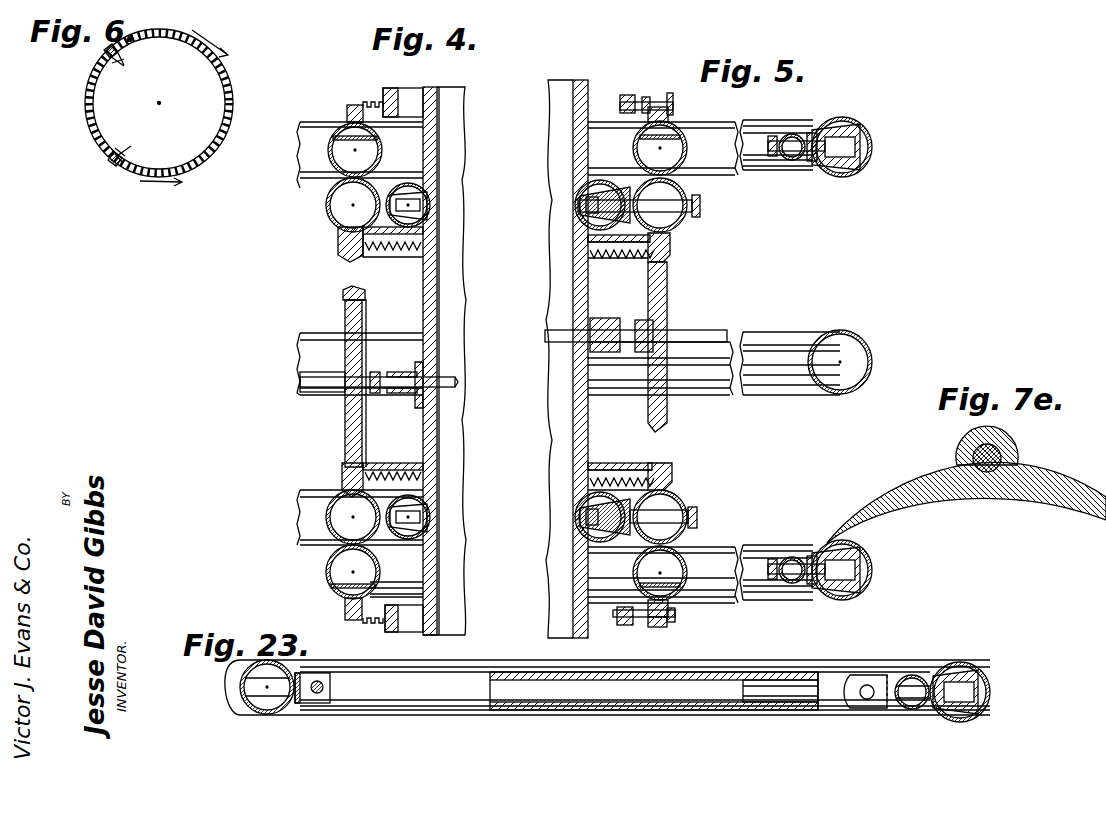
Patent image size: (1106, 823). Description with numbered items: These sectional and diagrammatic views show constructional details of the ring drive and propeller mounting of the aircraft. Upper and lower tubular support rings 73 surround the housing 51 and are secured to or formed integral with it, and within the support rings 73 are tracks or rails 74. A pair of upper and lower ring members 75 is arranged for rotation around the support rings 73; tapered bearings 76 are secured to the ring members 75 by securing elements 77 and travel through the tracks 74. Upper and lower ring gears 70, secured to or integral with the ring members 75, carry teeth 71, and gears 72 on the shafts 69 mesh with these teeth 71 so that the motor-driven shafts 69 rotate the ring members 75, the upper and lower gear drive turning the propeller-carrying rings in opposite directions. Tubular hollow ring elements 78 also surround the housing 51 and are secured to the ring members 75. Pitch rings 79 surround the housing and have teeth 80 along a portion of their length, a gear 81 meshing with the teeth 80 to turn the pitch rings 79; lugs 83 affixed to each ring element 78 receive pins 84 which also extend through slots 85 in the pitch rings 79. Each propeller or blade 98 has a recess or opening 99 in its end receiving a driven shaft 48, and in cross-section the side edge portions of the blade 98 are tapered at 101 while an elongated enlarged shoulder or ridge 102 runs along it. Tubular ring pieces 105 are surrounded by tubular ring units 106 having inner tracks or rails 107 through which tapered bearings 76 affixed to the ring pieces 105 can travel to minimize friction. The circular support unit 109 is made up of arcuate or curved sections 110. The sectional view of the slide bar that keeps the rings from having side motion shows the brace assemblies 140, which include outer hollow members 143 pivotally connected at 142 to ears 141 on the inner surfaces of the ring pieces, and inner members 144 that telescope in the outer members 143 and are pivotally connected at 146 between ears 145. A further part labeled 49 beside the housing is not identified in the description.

In FIG. 7E, the driven shaft 48 is at (974, 456).
In FIG. 4, the side plate 49 is at (455, 598).
In FIG. 5, the side plate 49 is at (572, 278).
In FIG. 4, the housing 51 is at (447, 458).
In FIG. 5, the housing 51 is at (563, 448).
In FIG. 4, the shafts 69 is at (456, 382).
In FIG. 5, the shafts 69 is at (560, 342).
In FIG. 4, the ring gears 70 is at (408, 250).
In FIG. 5, the ring gears 70 is at (672, 240).
In FIG. 4, the teeth 71 is at (372, 250).
In FIG. 5, the teeth 71 is at (622, 258).
In FIG. 4, the gears 72 is at (366, 330).
In FIG. 5, the gears 72 is at (670, 312).
In FIG. 4, the tubular support rings 73 is at (400, 172).
In FIG. 5, the tubular support rings 73 is at (592, 230).
In FIG. 4, the tracks or rails 74 is at (432, 220).
In FIG. 5, the tracks or rails 74 is at (602, 540).
In FIG. 4, the ring members 75 is at (326, 210).
In FIG. 5, the ring members 75 is at (688, 212).
In FIG. 5, the tapered bearings 76 is at (584, 210).
In FIG. 5, the securing elements 77 is at (701, 204).
In FIG. 4, the tubular hollow ring elements 78 is at (344, 130).
In FIG. 5, the tubular hollow ring elements 78 is at (682, 128).
In FIG. 23, the tubular hollow ring elements 78 is at (274, 716).
In FIG. 6, the pitch rings 79 is at (225, 84).
In FIG. 4, the pitch rings 79 is at (390, 96).
In FIG. 5, the pitch rings 79 is at (645, 96).
In FIG. 6, the teeth 80 is at (94, 135).
In FIG. 6, the gear 81 is at (102, 50).
In FIG. 5, the lugs 83 is at (669, 92).
In FIG. 5, the pins 84 is at (670, 110).
In FIG. 5, the slots 85 is at (624, 100).
In FIG. 7E, the propellers or blades 98 is at (1073, 519).
In FIG. 7E, the recess or opening 99 is at (990, 484).
In FIG. 5, the tapered side edge portions 101 is at (838, 542).
In FIG. 7E, the shoulder or ridge 102 is at (1010, 456).
In FIG. 5, the tubular ring pieces 105 is at (792, 160).
In FIG. 23, the tubular ring pieces 105 is at (952, 656).
In FIG. 5, the tubular ring units 106 is at (874, 127).
In FIG. 23, the tubular ring units 106 is at (976, 720).
In FIG. 5, the inner tracks or rails 107 is at (856, 166).
In FIG. 5, the circular support unit 109 is at (874, 337).
In FIG. 5, the arcuate or curved sections 110 is at (830, 390).
In FIG. 23, the brace assemblies 140 is at (588, 719).
In FIG. 23, the ears 141 is at (878, 680).
In FIG. 23, the pivotal connection 142 is at (864, 700).
In FIG. 23, the outer hollow members 143 is at (672, 710).
In FIG. 23, the inner members 144 is at (480, 706).
In FIG. 23, the ears 145 is at (338, 676).
In FIG. 23, the pivotal connection 146 is at (317, 694).